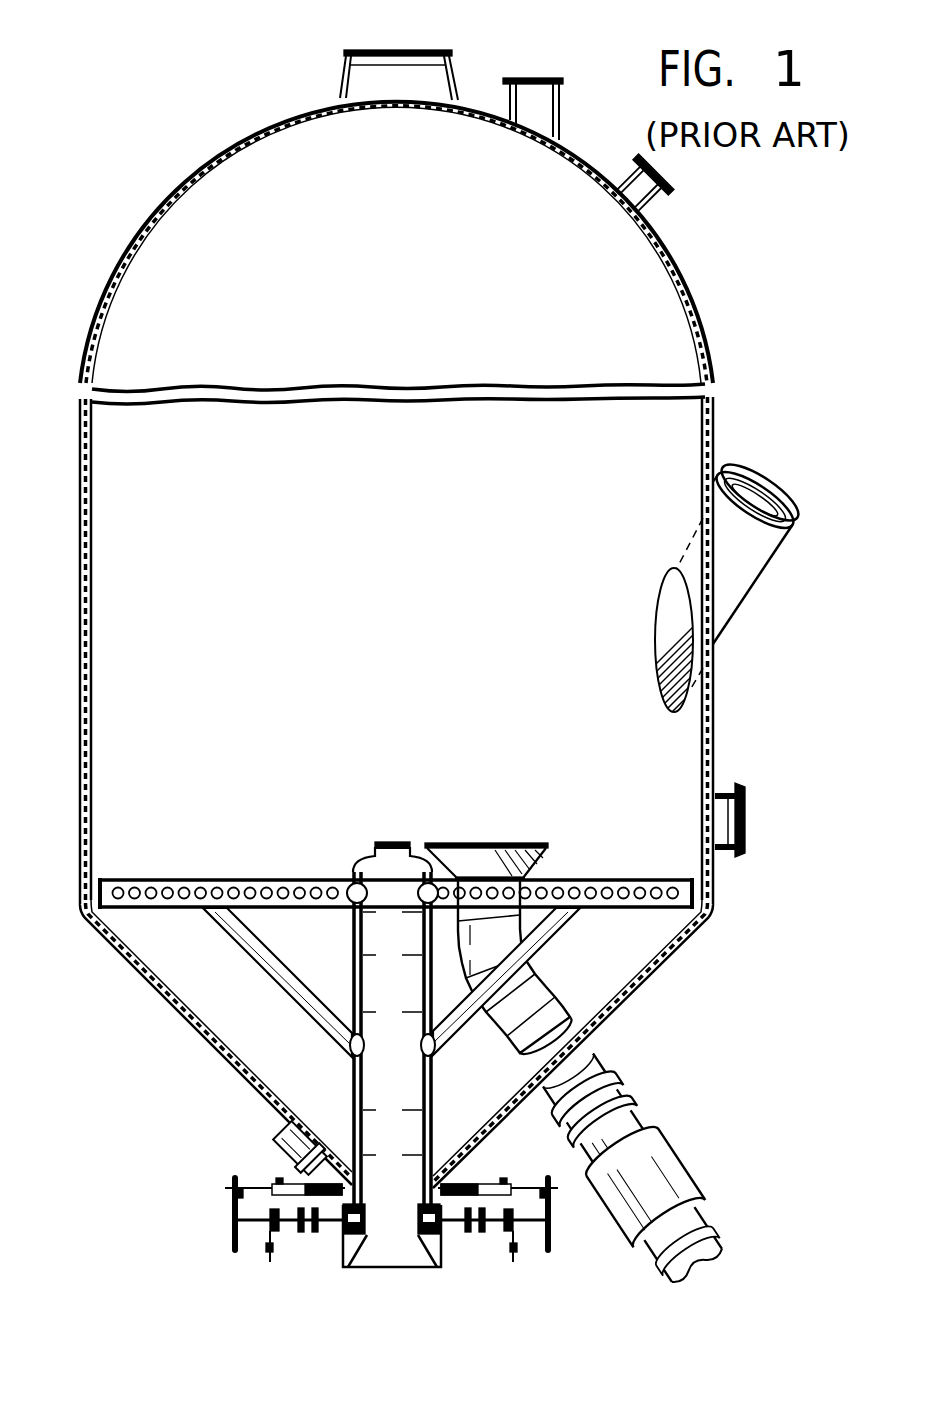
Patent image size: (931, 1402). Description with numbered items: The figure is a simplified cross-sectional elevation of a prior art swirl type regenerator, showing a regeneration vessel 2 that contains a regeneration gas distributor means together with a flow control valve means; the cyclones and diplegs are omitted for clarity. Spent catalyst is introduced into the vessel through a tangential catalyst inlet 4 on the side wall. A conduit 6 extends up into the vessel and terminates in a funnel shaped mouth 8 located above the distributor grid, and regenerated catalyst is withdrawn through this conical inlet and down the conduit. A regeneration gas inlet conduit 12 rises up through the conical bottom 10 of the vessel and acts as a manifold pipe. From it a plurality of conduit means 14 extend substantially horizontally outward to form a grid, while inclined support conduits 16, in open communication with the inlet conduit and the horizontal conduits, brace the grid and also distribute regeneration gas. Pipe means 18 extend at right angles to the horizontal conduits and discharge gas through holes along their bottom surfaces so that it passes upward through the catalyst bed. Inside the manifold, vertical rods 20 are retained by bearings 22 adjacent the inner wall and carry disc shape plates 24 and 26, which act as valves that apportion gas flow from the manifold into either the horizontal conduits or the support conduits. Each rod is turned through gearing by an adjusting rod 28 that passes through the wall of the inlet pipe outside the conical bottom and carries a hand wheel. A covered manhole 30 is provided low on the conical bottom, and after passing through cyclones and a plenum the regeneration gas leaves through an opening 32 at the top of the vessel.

The regeneration vessel 2 is at (93, 634).
The tangential catalyst inlet 4 is at (740, 598).
The conduit 6 is at (672, 1156).
The funnel shaped mouth 8 is at (474, 841).
The conical bottom 10 is at (632, 1003).
The regeneration gas inlet conduit 12 is at (433, 1094).
The conduit means 14 is at (230, 882).
The support conduits 16 is at (257, 963).
The pipe means 18 is at (150, 871).
The vertical rods 20 is at (392, 1111).
The bearings 22 is at (392, 1035).
The disc shape plate 24 is at (420, 1045).
The disc shape plate 26 is at (417, 893).
The adjusting rod 28 is at (334, 1228).
The covered manhole 30 is at (290, 1157).
The opening 32 is at (421, 66).